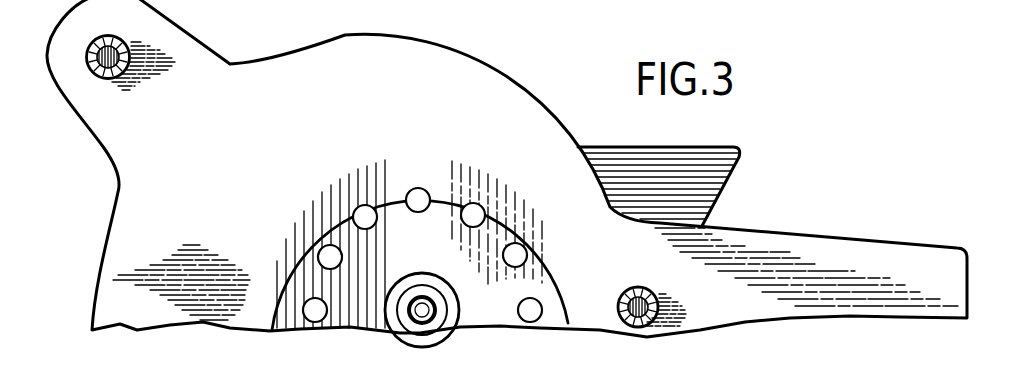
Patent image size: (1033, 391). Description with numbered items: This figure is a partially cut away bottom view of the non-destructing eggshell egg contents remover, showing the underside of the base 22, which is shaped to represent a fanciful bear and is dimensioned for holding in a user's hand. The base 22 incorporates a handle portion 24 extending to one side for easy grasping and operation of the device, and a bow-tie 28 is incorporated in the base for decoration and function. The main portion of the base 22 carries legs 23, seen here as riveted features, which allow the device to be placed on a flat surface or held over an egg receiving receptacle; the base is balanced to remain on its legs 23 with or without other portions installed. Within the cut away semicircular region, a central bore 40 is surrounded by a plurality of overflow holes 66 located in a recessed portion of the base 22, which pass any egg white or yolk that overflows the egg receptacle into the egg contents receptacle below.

The base 22 is at (493, 61).
The legs 23 is at (97, 37).
The handle portion 24 is at (885, 252).
The bow-tie 28 is at (673, 148).
The central bore 40 is at (431, 309).
The overflow holes 66 is at (343, 258).